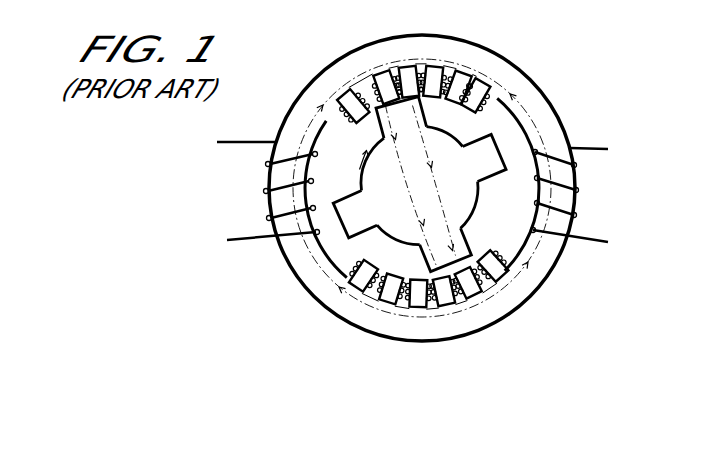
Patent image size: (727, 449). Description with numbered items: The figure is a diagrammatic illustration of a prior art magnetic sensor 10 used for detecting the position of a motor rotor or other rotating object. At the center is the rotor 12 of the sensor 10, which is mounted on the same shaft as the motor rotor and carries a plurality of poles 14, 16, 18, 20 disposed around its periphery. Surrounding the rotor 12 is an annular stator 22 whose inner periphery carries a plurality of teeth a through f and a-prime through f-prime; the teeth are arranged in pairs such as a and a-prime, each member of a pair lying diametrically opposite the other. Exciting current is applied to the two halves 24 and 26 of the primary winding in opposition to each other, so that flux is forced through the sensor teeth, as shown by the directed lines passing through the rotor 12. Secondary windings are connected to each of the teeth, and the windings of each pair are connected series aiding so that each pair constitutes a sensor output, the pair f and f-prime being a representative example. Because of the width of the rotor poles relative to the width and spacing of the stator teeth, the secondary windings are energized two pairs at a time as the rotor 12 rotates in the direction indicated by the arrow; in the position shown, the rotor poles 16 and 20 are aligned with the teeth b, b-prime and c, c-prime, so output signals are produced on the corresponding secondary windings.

The magnetic sensor 10 is at (476, 27).
The rotor 12 is at (476, 202).
The pole 14 is at (476, 142).
The pole 16 is at (381, 123).
The pole 18 is at (361, 229).
The pole 20 is at (461, 230).
The annular stator 22 is at (560, 122).
The half of primary winding 24 is at (264, 191).
The half of primary winding 26 is at (582, 190).